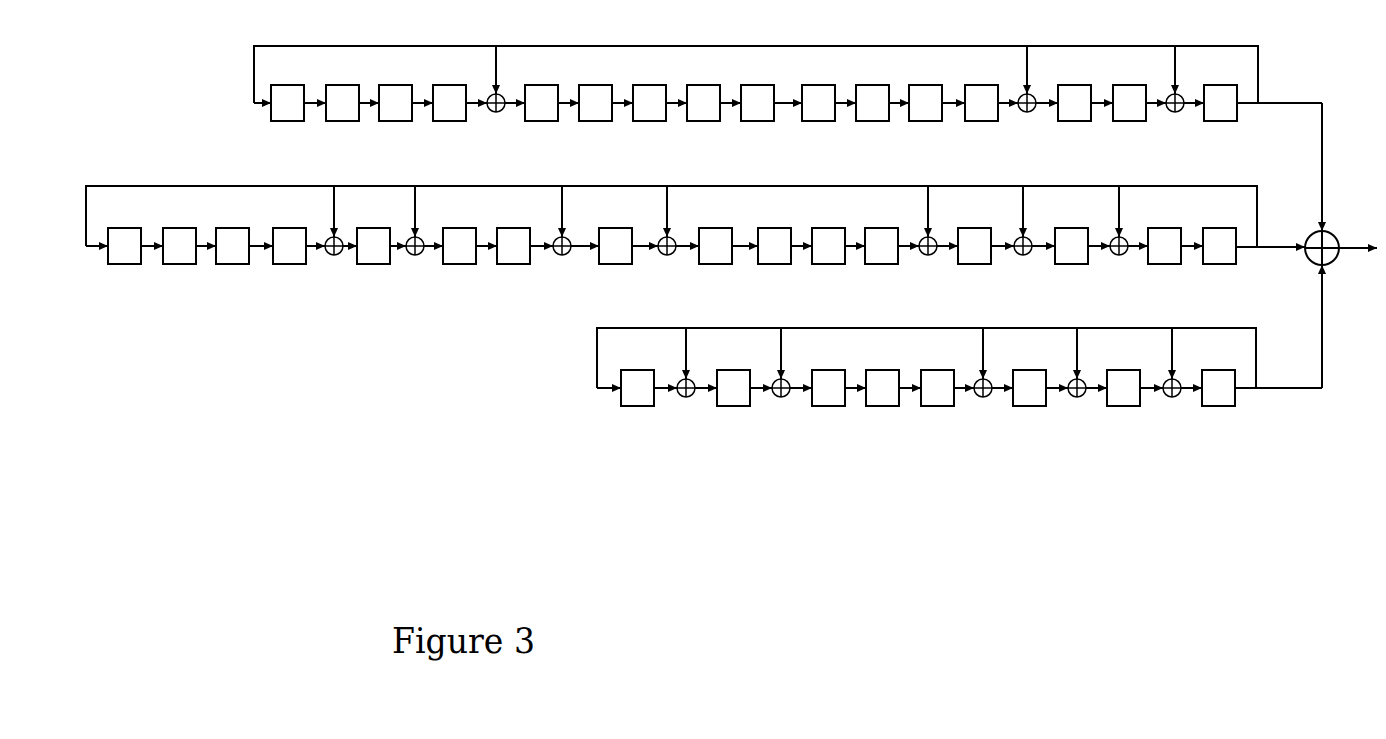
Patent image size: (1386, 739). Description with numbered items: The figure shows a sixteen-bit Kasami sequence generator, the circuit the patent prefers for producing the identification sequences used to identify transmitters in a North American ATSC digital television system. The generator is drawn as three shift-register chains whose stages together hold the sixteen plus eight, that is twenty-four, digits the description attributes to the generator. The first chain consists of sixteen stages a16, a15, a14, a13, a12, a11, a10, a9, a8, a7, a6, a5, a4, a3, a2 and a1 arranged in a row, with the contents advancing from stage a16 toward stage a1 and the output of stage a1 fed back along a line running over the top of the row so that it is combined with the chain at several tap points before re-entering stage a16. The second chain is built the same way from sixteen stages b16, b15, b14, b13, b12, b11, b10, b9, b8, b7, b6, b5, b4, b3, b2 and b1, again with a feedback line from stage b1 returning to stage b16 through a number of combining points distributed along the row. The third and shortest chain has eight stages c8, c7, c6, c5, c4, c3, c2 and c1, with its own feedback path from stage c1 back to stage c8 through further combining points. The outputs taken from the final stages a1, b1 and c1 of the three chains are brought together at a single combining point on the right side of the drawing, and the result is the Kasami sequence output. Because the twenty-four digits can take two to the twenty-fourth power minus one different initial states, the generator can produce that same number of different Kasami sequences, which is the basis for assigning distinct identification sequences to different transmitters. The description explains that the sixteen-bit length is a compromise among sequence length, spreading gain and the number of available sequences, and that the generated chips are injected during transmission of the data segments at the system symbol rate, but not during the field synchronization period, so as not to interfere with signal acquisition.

The shift register stage a16 is at (287, 103).
The shift register stage a15 is at (342, 103).
The shift register stage a14 is at (395, 103).
The shift register stage a13 is at (449, 103).
The shift register stage a12 is at (541, 103).
The shift register stage a11 is at (595, 103).
The shift register stage a10 is at (649, 103).
The shift register stage a9 is at (703, 103).
The shift register stage a8 is at (757, 103).
The shift register stage a7 is at (818, 103).
The shift register stage a6 is at (872, 103).
The shift register stage a5 is at (925, 103).
The shift register stage a4 is at (981, 103).
The shift register stage a3 is at (1074, 103).
The shift register stage a2 is at (1129, 103).
The shift register stage a1 is at (1220, 103).
The shift register stage b16 is at (124, 246).
The shift register stage b15 is at (179, 246).
The shift register stage b14 is at (232, 246).
The shift register stage b13 is at (289, 246).
The shift register stage b12 is at (373, 246).
The shift register stage b11 is at (459, 246).
The shift register stage b10 is at (513, 246).
The shift register stage b9 is at (615, 246).
The shift register stage b8 is at (715, 246).
The shift register stage b7 is at (774, 246).
The shift register stage b6 is at (828, 246).
The shift register stage b5 is at (881, 246).
The shift register stage b4 is at (974, 246).
The shift register stage b3 is at (1071, 246).
The shift register stage b2 is at (1164, 246).
The shift register stage b1 is at (1219, 246).
The shift register stage c8 is at (637, 388).
The shift register stage c7 is at (733, 388).
The shift register stage c6 is at (828, 388).
The shift register stage c5 is at (882, 388).
The shift register stage c4 is at (937, 388).
The shift register stage c3 is at (1029, 388).
The shift register stage c2 is at (1123, 388).
The shift register stage c1 is at (1218, 388).